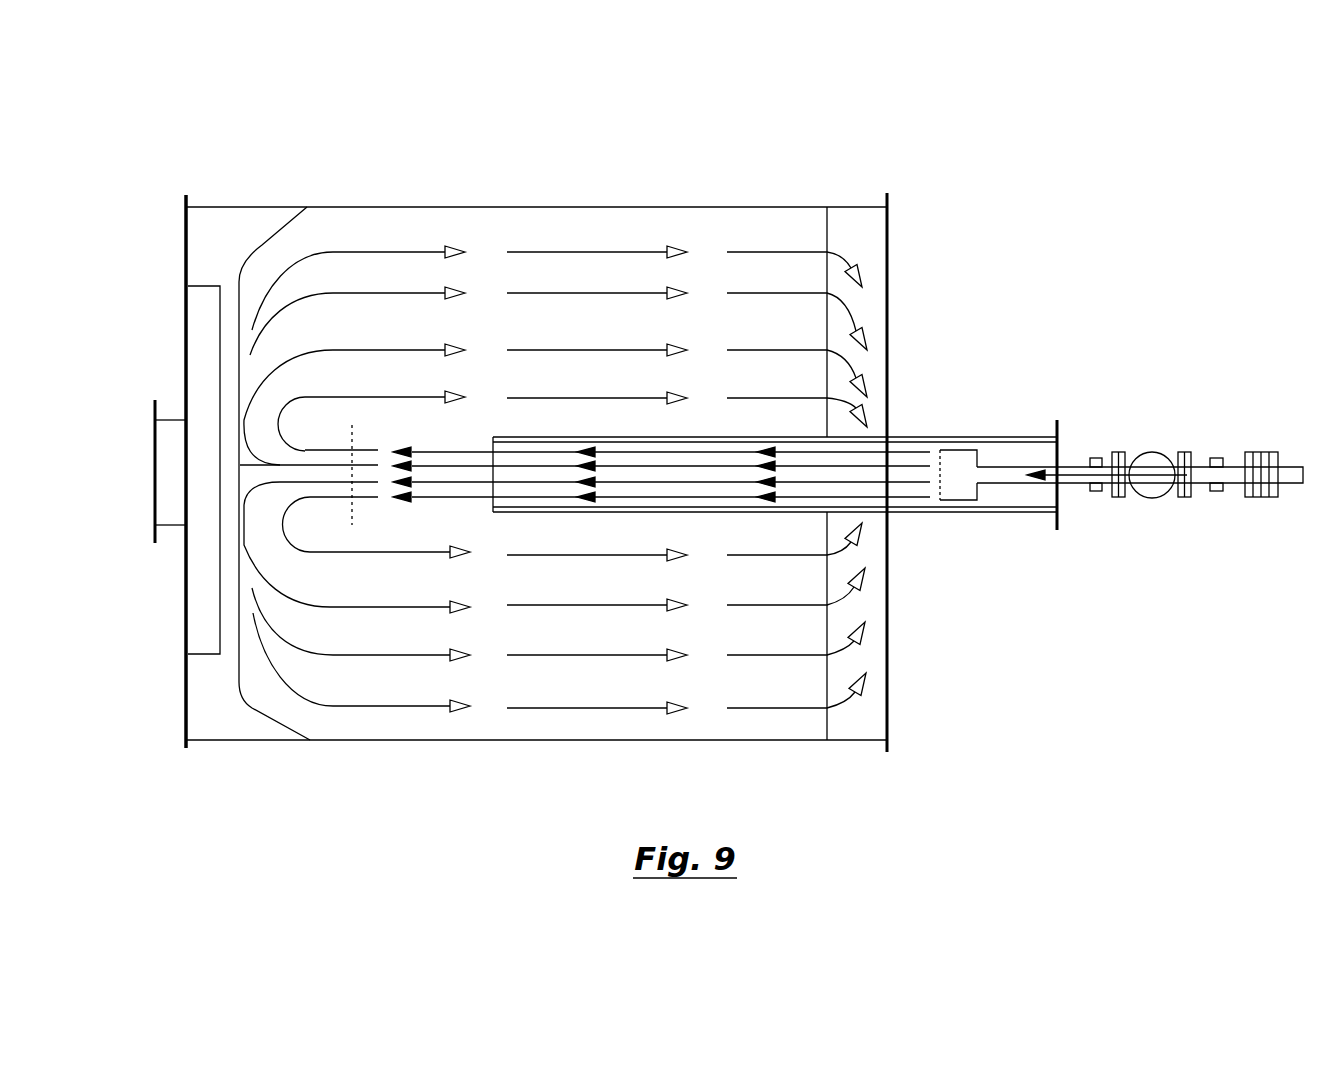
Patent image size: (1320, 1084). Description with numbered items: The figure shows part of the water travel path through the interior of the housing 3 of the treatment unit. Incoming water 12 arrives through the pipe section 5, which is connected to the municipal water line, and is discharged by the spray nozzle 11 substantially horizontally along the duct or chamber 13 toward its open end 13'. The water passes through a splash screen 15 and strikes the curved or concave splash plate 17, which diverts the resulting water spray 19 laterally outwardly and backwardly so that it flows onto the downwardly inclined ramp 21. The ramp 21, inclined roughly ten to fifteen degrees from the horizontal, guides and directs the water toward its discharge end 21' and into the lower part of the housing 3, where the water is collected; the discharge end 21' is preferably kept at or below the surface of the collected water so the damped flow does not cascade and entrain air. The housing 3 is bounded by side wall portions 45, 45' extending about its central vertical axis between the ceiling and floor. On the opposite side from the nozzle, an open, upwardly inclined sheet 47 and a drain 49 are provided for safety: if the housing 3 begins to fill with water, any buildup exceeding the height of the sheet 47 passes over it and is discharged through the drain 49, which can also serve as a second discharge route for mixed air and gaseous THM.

The housing 3 is at (502, 207).
The pipe section 5 is at (1233, 465).
The spray nozzle 11 is at (958, 463).
The incoming water 12 is at (1077, 467).
The duct or chamber 13 is at (775, 457).
The inlet tube outlet end 13' is at (502, 457).
The splash screen 15 is at (356, 443).
The splash plate 17 is at (287, 457).
The water spray 19 is at (383, 293).
The downwardly inclined ramp 21 is at (597, 480).
The discharge end of the inclined ramp 21' is at (845, 468).
The side wall portion 45 is at (926, 472).
The side wall portion 45' is at (145, 471).
The upwardly inclined sheet 47 is at (218, 325).
The drain 49 is at (153, 477).